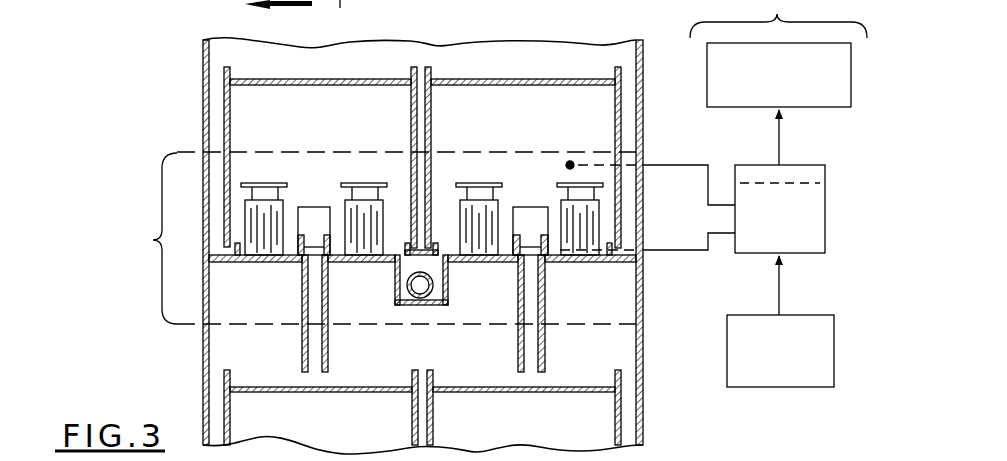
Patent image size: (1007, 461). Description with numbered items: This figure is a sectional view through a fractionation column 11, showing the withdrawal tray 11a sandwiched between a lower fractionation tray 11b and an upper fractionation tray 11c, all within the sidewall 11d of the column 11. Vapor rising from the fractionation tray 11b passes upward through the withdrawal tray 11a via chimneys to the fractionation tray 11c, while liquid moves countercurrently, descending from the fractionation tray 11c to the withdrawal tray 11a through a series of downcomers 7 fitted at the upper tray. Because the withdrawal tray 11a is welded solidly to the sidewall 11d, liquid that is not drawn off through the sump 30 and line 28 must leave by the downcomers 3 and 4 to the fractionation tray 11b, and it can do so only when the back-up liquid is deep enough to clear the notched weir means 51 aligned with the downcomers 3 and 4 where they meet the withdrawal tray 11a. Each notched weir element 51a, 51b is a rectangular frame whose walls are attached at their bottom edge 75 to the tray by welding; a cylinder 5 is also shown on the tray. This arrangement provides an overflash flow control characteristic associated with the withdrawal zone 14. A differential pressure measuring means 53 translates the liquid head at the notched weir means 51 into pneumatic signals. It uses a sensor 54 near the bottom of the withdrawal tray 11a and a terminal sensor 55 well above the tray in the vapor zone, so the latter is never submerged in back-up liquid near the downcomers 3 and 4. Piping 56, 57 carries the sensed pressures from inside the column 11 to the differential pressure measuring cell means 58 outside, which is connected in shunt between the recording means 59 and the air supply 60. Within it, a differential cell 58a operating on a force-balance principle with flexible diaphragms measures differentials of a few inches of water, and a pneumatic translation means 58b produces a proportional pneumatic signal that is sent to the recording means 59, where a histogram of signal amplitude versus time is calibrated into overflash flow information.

The downcomer 3 is at (524, 356).
The downcomer 4 is at (324, 350).
The cylinder 5 is at (366, 185).
The downcomers 7 is at (224, 112).
The column 11 is at (647, 406).
The withdrawal tray 11a is at (398, 254).
The fractionation tray 11b is at (483, 387).
The fractionation tray 11c is at (492, 79).
The sidewall 11d is at (226, 58).
The withdrawal zone 14 is at (380, 238).
The line 28 is at (434, 283).
The sump 30 is at (437, 292).
The notched weir means 51 is at (319, 206).
The notched weir element 51a is at (312, 215).
The float 51b is at (522, 206).
The differential pressure measuring means 53 is at (778, 19).
The sensor 54 is at (577, 238).
The sensor 55 is at (572, 161).
The piping 56 is at (680, 164).
The piping 57 is at (683, 253).
The differential pressure measuring cell means 58 is at (827, 207).
The differential cell 58a is at (808, 253).
The pneumatic translation means 58b is at (810, 164).
The recording means 59 is at (707, 80).
The air supply 60 is at (780, 387).
The bottom edge 75 is at (300, 258).